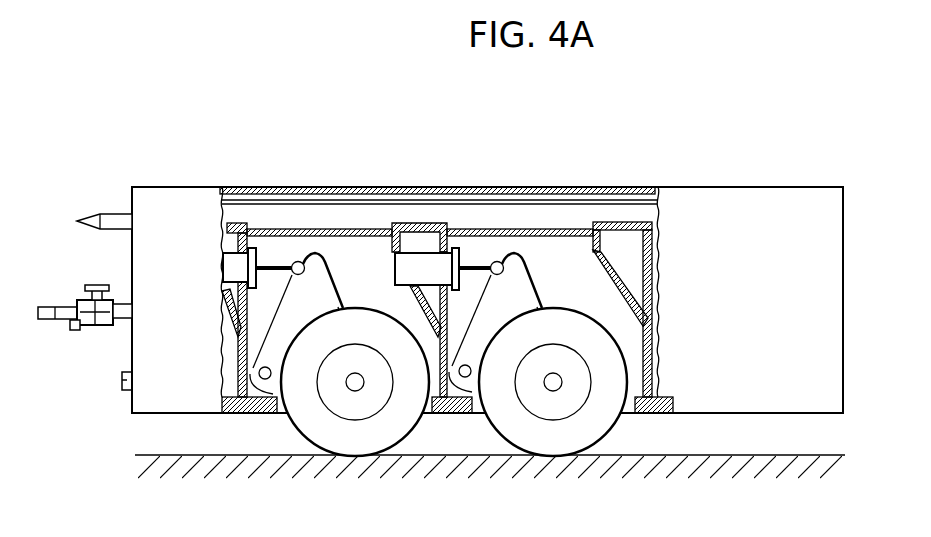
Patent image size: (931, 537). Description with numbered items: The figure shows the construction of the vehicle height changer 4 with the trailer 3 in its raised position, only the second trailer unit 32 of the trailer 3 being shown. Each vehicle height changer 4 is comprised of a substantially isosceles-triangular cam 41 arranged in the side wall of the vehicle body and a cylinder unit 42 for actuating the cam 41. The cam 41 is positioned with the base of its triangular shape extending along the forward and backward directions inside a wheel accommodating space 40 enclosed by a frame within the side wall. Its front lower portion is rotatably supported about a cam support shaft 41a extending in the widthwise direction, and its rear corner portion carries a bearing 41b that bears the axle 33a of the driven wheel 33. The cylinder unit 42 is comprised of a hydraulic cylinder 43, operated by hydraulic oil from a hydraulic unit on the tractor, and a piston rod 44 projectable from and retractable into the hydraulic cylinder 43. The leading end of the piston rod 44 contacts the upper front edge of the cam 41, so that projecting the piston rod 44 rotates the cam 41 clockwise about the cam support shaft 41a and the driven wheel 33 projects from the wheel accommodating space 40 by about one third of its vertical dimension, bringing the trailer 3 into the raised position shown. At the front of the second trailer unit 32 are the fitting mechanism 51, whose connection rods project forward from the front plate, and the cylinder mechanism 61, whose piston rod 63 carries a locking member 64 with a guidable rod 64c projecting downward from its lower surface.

The trailer 3 is at (587, 183).
The second trailer unit 32 is at (457, 153).
The vehicle height changer 4 is at (392, 112).
The wheel accommodating space 40 is at (380, 283).
The cam 41 is at (300, 316).
The cam support shaft 41a is at (262, 386).
The bearing 41b is at (362, 402).
The cylinder unit 42 is at (329, 152).
The hydraulic cylinder 43 is at (228, 266).
The piston rod 44 is at (278, 266).
The driven wheel 33 is at (503, 422).
The axle 33a is at (350, 392).
The fitting mechanism 51 is at (108, 214).
The cylinder mechanism 61 is at (128, 400).
The piston rod 63 is at (122, 323).
The locking member 64 is at (72, 344).
The guidable rod 64c is at (36, 312).